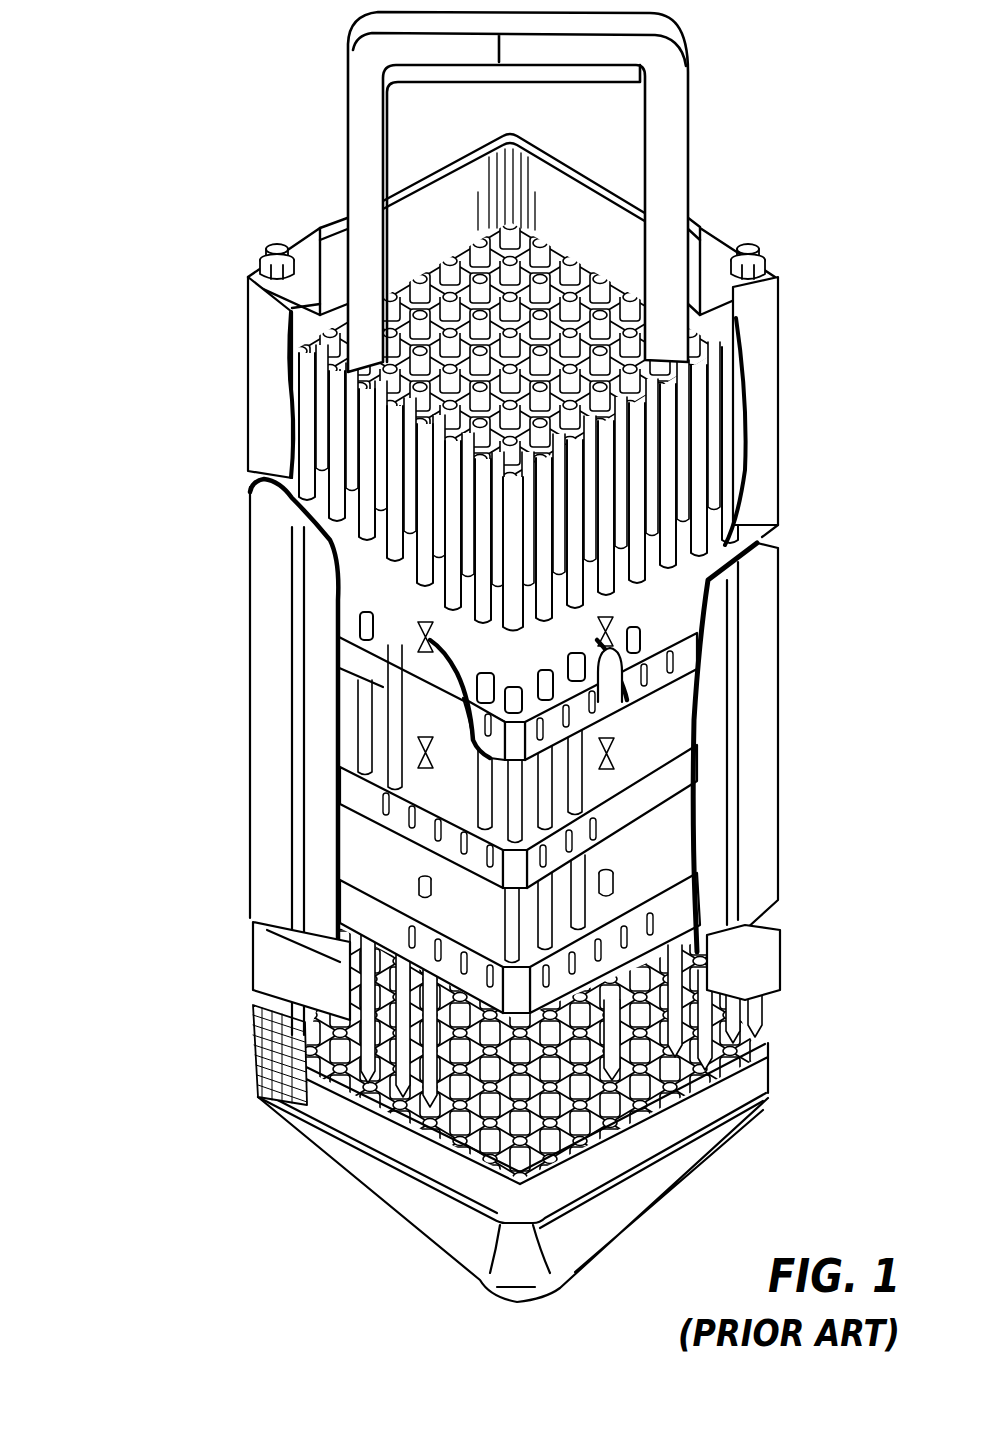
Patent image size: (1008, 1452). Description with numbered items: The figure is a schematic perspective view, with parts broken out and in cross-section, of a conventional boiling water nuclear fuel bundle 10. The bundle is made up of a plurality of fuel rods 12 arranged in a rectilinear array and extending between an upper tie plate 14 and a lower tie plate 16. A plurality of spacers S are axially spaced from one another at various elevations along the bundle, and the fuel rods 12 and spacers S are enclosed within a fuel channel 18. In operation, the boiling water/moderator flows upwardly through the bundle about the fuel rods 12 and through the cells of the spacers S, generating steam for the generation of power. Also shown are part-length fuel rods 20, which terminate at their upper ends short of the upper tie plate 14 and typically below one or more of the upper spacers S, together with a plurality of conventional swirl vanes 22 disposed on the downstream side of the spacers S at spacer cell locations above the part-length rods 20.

The boiling water nuclear fuel bundle 10 is at (471, 657).
The fuel rods 12 is at (670, 508).
The upper tie plate 14 is at (337, 416).
The lower tie plate 16 is at (397, 1157).
The fuel channel 18 is at (275, 712).
The part-length fuel rods 20 is at (615, 868).
The swirl vanes 22 is at (430, 738).
The spacers S is at (472, 701).